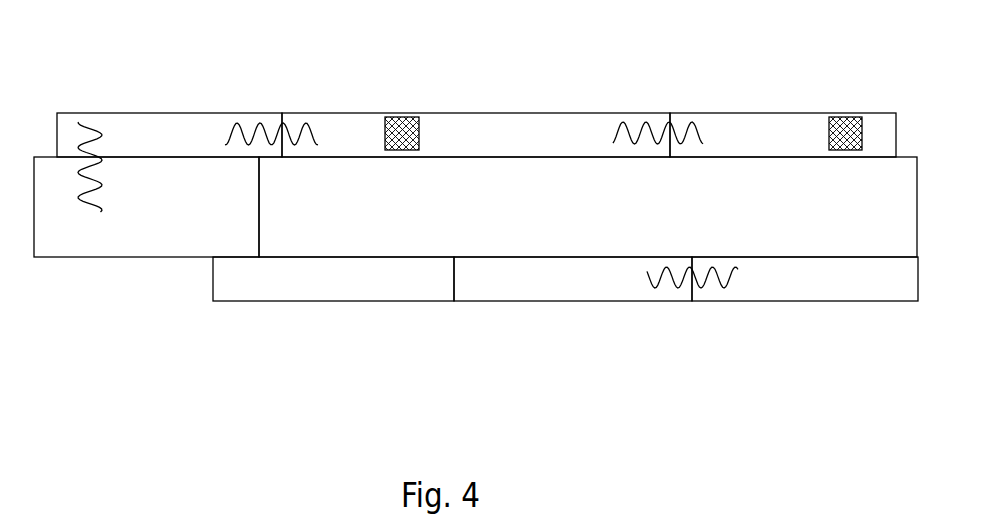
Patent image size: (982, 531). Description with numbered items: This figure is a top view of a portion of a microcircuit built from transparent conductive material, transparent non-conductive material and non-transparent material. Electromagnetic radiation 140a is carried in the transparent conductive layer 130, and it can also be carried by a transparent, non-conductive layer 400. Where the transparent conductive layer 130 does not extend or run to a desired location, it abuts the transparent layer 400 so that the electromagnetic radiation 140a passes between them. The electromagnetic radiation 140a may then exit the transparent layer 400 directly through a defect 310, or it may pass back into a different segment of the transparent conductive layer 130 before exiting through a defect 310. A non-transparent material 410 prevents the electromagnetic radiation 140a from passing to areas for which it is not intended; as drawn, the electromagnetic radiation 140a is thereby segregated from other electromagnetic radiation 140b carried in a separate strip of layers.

The transparent conductive layer 130 is at (487, 207).
The transparent non-conductive layer 400 is at (363, 207).
The non-transparent material 410 is at (565, 229).
The defect 310 is at (403, 114).
The electromagnetic radiation 140a is at (627, 120).
The other electromagnetic radiation 140b is at (677, 302).